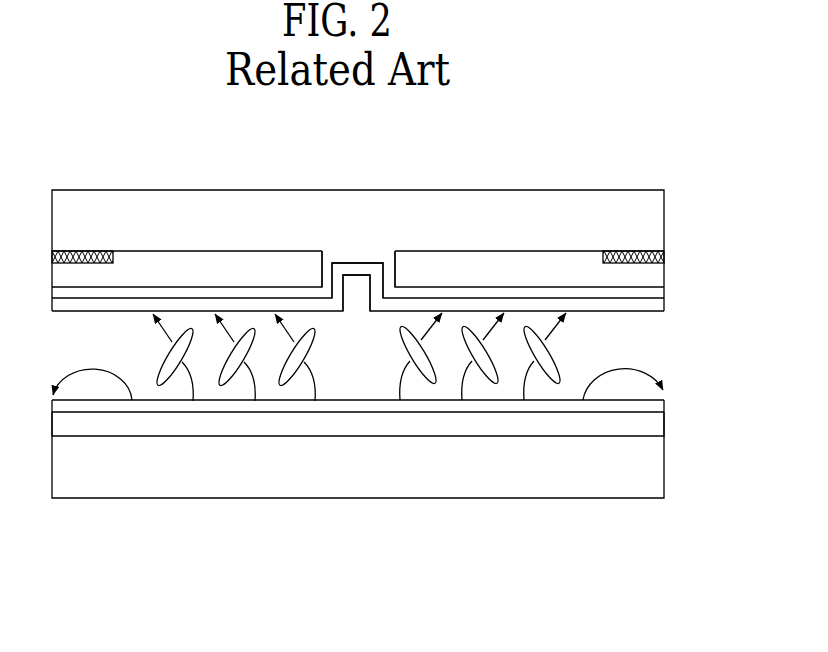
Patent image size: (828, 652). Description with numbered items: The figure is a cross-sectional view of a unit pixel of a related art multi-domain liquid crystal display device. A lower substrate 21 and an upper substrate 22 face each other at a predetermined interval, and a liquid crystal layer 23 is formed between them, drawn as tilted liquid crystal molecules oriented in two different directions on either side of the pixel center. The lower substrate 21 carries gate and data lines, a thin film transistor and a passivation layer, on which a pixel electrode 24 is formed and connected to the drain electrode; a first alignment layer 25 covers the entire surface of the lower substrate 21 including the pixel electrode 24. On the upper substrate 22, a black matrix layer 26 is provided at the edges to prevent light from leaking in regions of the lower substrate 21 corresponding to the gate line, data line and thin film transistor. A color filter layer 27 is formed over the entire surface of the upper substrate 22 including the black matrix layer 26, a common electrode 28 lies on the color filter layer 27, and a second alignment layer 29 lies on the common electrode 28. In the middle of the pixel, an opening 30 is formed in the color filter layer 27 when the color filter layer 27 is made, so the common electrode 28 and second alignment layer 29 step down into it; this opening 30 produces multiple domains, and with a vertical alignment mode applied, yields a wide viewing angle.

The lower substrate 21 is at (658, 468).
The upper substrate 22 is at (657, 200).
The liquid crystal layer 23 is at (552, 358).
The pixel electrode 24 is at (658, 424).
The first alignment layer 25 is at (658, 403).
The black matrix layer 26 is at (663, 252).
The color filter layer 27 is at (657, 280).
The common electrode 28 is at (657, 287).
The second alignment layer 29 is at (657, 304).
The opening 30 is at (357, 250).